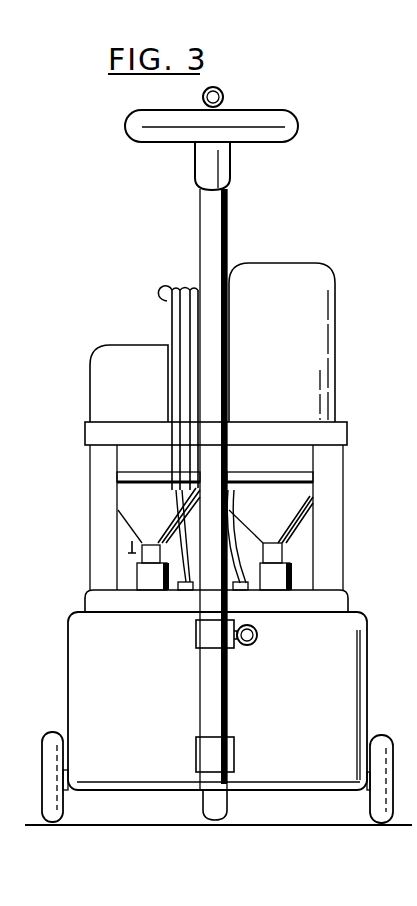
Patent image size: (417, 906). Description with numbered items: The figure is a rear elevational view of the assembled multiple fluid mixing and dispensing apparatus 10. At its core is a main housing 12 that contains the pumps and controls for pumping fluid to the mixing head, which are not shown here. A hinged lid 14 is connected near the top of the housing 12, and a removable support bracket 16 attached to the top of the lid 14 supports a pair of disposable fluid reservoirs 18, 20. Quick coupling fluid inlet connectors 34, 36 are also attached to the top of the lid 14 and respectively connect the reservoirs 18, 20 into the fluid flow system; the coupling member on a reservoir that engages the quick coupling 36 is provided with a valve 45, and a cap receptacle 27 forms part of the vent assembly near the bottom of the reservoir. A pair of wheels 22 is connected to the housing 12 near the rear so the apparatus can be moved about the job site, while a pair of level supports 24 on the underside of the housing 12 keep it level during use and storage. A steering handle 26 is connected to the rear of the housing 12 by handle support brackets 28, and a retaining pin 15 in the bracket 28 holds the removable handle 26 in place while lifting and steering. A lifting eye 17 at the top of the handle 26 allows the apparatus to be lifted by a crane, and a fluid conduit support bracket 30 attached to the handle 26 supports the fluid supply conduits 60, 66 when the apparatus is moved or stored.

The multiple fluid mixing and dispensing apparatus 10 is at (304, 172).
The main housing 12 is at (367, 690).
The hinged lid 14 is at (349, 602).
The retaining pin 15 is at (258, 637).
The removable support bracket 16 is at (347, 503).
The lifting eye 17 is at (226, 97).
The fluid reservoir 18 is at (330, 316).
The fluid reservoir 20 is at (90, 378).
The wheels 22 is at (42, 764).
The level supports 24 is at (232, 810).
The steering handle 26 is at (200, 214).
The cap receptacle 27 is at (254, 548).
The handle support brackets 28 is at (194, 638).
The fluid conduit support bracket 30 is at (163, 287).
The quick coupling fluid inlet connector 34 is at (293, 577).
The quick coupling fluid inlet connector 36 is at (143, 582).
The valve 45 is at (130, 553).
The fluid supply conduit 60 is at (247, 590).
The fluid supply conduit 66 is at (180, 589).